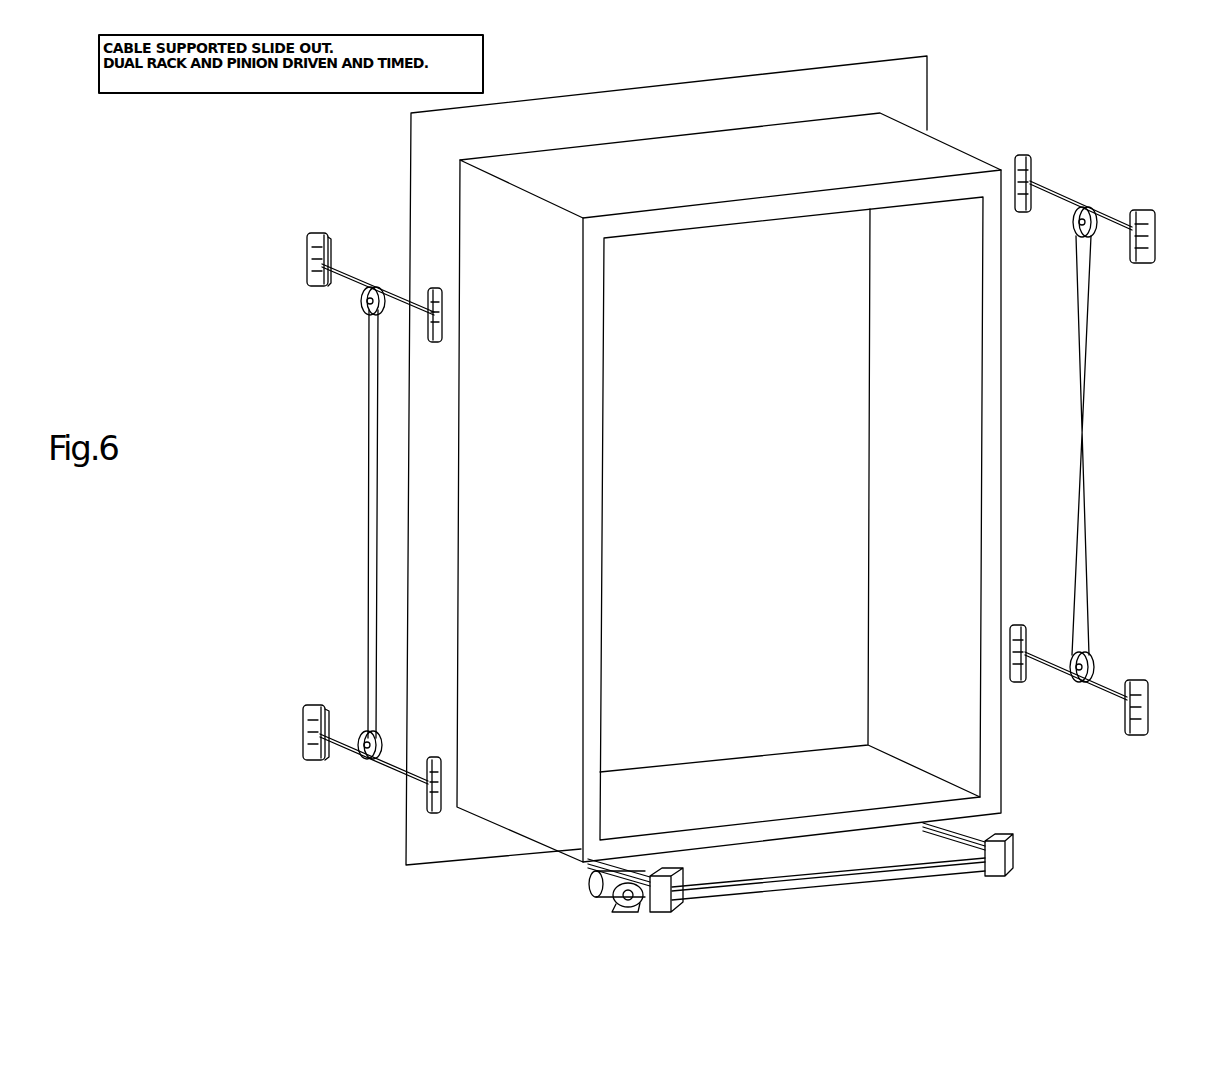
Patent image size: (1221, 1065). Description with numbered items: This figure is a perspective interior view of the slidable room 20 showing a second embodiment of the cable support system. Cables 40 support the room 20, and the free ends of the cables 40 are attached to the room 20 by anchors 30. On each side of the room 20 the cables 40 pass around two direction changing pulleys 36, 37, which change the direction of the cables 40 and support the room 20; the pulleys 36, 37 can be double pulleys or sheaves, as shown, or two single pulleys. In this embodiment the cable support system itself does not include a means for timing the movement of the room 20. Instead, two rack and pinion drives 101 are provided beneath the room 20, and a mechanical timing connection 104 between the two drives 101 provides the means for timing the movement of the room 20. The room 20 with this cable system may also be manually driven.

The room 20 is at (990, 465).
The anchor 30 is at (310, 288).
The pulley 36 is at (362, 733).
The pulley 37 is at (377, 311).
The cable 40 is at (395, 298).
The rack and pinion drive 101 is at (657, 868).
The timing connection 104 is at (901, 878).